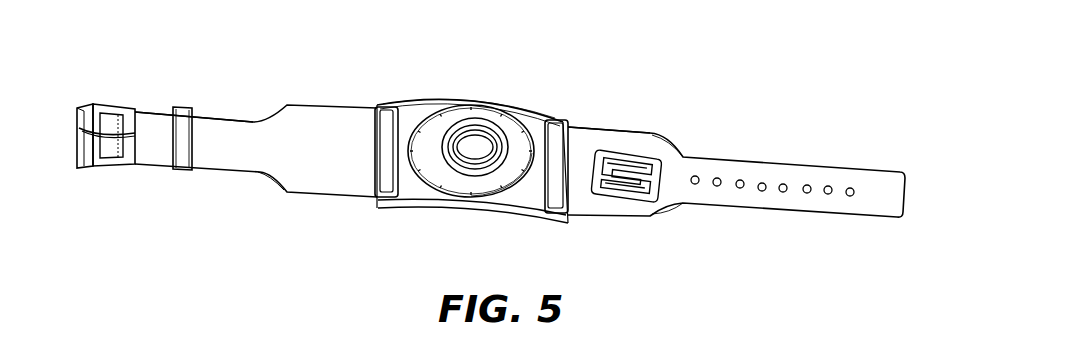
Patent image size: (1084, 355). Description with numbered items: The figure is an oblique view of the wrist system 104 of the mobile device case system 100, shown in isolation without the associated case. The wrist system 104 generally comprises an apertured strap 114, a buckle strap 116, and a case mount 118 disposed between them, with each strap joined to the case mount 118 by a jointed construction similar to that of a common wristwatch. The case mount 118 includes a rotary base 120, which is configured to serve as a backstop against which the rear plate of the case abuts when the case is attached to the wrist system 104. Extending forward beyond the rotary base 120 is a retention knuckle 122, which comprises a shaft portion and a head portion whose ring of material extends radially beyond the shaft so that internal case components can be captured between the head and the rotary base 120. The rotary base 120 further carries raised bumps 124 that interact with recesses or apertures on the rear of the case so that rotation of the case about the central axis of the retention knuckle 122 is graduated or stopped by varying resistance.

The mobile device case system 100 is at (697, 45).
The wrist system 104 is at (530, 103).
The apertured strap 114 is at (720, 160).
The buckle strap 116 is at (253, 124).
The case mount 118 is at (424, 96).
The rotary base 120 is at (503, 181).
The retention knuckle 122 is at (481, 119).
The raised bumps 124 is at (432, 178).